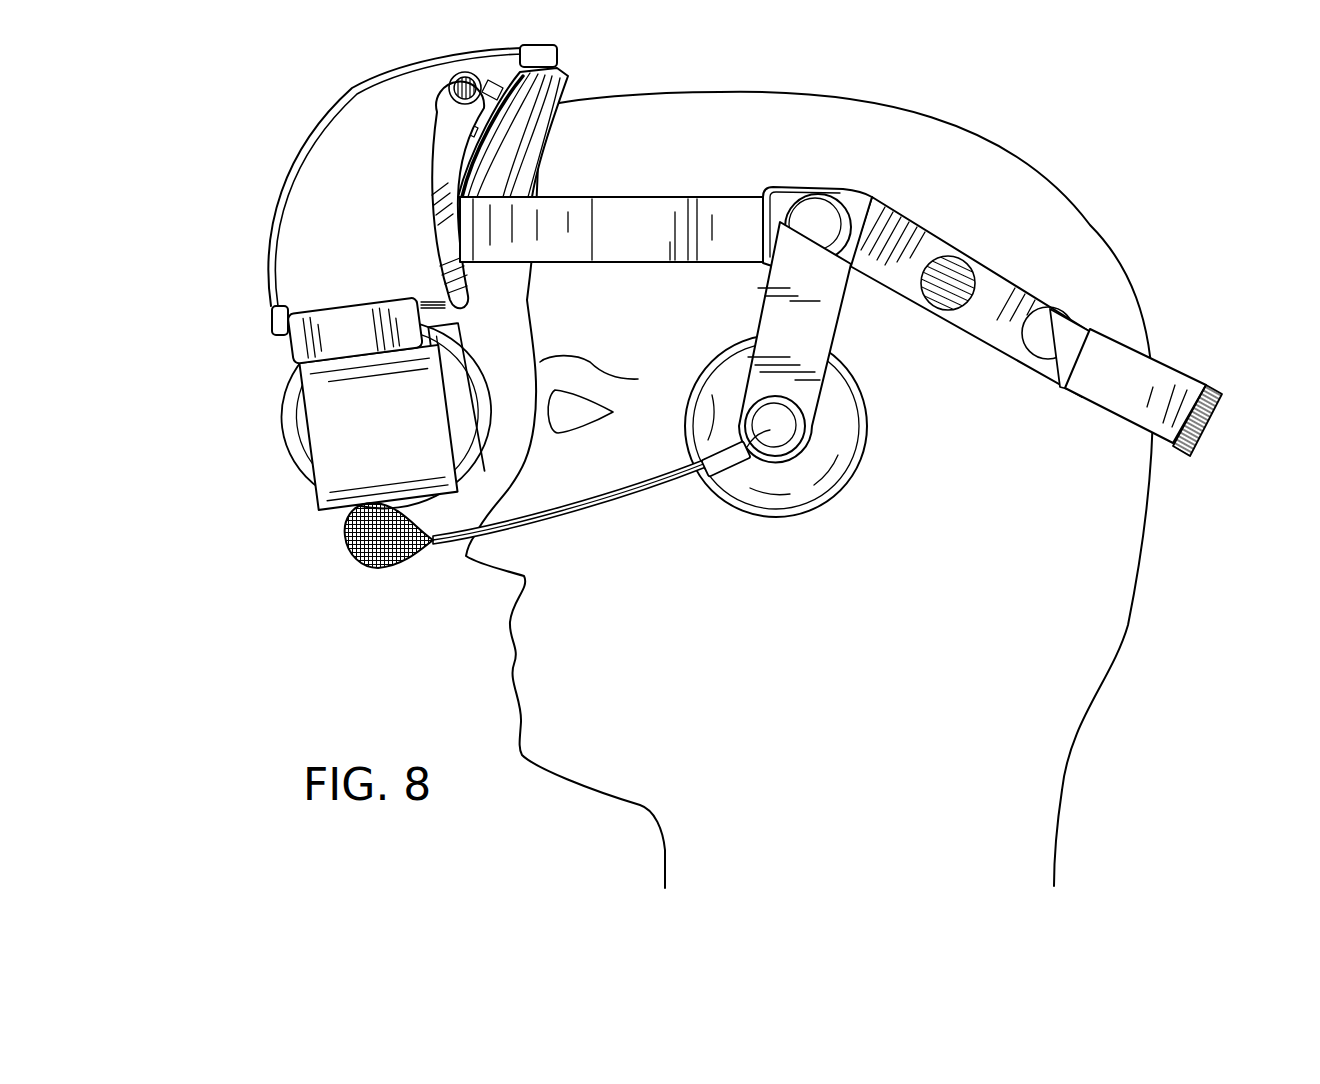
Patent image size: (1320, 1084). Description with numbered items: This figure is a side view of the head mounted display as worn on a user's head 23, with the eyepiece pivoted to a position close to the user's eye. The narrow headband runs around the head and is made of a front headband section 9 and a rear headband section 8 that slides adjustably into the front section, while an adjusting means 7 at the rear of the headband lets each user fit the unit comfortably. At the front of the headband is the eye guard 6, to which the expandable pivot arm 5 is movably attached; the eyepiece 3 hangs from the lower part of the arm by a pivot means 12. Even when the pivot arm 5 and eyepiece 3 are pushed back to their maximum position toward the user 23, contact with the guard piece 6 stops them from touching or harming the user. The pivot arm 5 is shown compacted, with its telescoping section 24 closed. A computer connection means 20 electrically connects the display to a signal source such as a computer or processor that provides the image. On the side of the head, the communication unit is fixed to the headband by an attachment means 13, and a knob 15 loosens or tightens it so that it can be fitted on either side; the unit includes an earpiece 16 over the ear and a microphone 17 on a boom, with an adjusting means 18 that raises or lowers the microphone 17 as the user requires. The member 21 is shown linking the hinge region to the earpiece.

The eyepiece 3 is at (298, 395).
The pivot arm 5 is at (430, 158).
The eye guard 6 is at (461, 230).
The adjusting means 7 is at (1226, 382).
The rear headband section 8 is at (1133, 347).
The front headband section 9 is at (688, 197).
The pivot means 12 is at (435, 293).
The attachment means 13 is at (880, 205).
The knob 15 is at (818, 203).
The earpiece 16 is at (848, 447).
The microphone 17 is at (350, 545).
The adjusting means 18 is at (776, 450).
The computer connection means 20 is at (300, 134).
The vertical arm 21 is at (827, 322).
The user's head 23 is at (1073, 225).
The telescoping section 24 is at (440, 260).